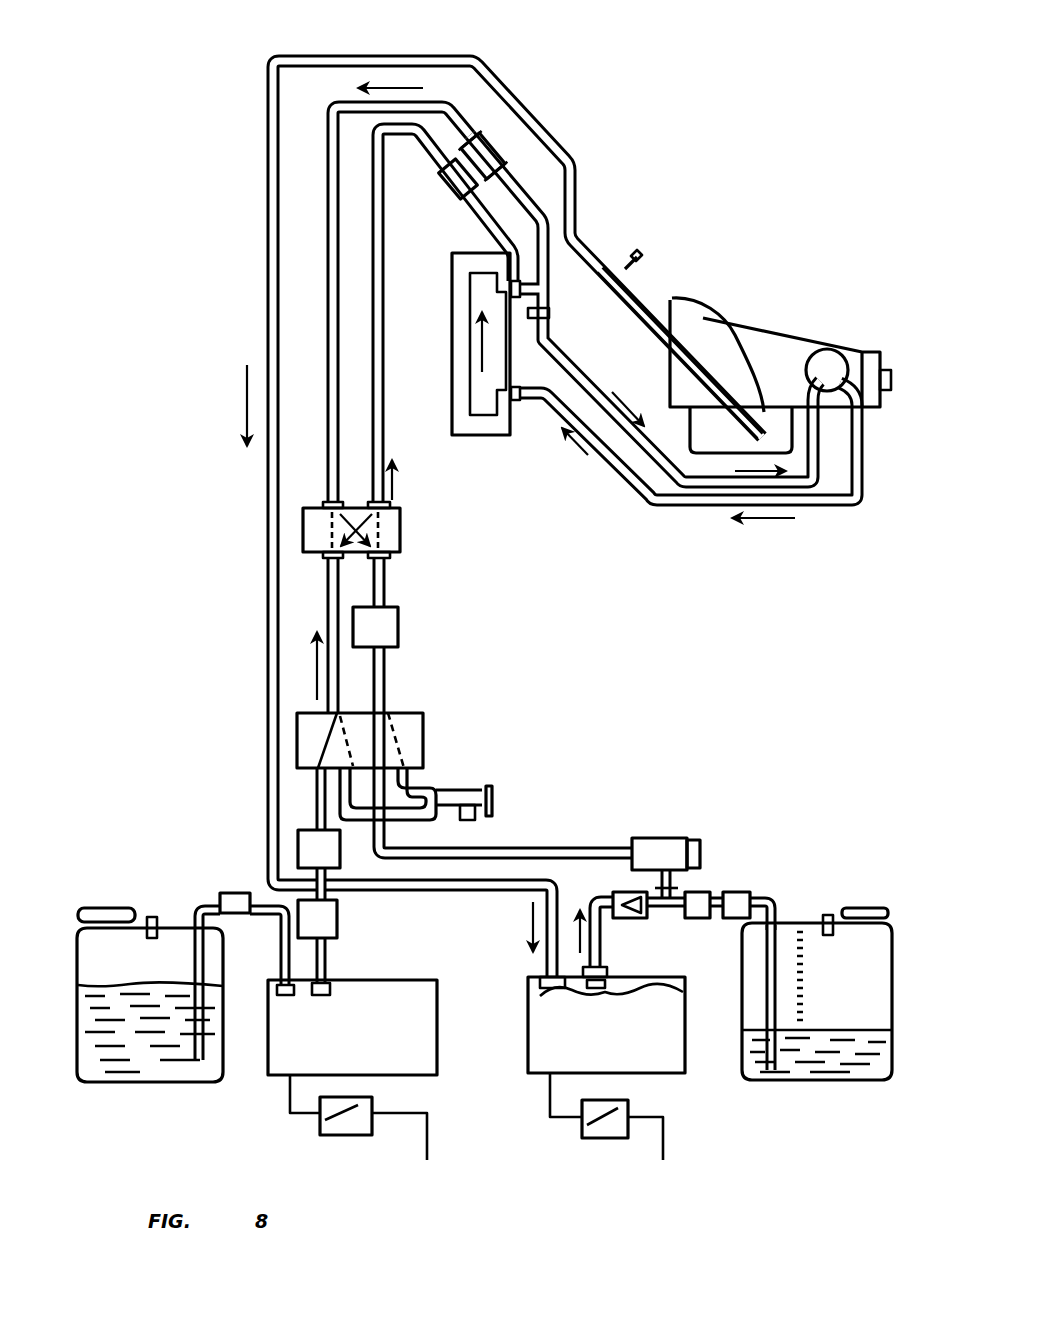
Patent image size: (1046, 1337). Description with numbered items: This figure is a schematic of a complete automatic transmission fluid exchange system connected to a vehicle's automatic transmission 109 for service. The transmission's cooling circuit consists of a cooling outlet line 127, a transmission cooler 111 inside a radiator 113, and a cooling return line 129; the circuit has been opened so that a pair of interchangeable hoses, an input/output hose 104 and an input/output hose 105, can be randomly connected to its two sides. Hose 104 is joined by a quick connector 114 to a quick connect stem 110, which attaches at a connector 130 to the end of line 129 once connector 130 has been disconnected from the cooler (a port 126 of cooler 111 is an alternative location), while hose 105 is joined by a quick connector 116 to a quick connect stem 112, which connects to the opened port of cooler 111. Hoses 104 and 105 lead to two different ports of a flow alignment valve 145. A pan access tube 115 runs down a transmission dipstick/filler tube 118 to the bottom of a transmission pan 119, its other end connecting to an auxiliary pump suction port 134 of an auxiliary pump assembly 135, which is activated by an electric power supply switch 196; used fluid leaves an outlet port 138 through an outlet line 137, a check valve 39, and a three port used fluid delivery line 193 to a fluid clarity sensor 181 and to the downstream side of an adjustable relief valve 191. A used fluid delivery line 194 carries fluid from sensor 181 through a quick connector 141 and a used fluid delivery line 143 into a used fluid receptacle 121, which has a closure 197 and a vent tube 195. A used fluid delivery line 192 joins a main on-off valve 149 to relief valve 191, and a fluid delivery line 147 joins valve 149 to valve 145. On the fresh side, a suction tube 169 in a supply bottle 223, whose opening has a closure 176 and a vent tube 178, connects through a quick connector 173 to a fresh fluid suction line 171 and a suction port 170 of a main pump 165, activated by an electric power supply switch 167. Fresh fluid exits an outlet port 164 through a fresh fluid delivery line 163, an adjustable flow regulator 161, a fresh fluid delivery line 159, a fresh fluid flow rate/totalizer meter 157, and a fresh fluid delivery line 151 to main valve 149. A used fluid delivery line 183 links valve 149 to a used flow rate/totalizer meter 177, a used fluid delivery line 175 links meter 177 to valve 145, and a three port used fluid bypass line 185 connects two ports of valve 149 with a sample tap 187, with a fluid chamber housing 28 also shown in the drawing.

The fluid chamber housing 28 is at (508, 256).
The check valve 39 is at (620, 892).
The input/output hose 104 is at (384, 328).
The input/output hose 105 is at (328, 306).
The automatic transmission 109 is at (766, 352).
The quick connect stem 110 is at (507, 222).
The transmission cooler 111 is at (482, 418).
The quick connect stem 112 is at (522, 183).
The radiator 113 is at (445, 362).
The quick connector 114 is at (455, 165).
The pan access tube 115 is at (524, 112).
The quick connector 116 is at (488, 140).
The transmission dipstick/filler tube 118 is at (654, 288).
The transmission pan 119 is at (700, 425).
The used fluid receptacle 121 is at (878, 968).
The port 126 is at (518, 403).
The cooling outlet line 127 is at (667, 507).
The cooling return line 129 is at (632, 452).
The connector 130 is at (549, 313).
The auxiliary pump suction port 134 is at (530, 990).
The auxiliary pump assembly 135 is at (562, 1030).
The outlet line 137 is at (600, 915).
The outlet port 138 is at (683, 992).
The quick connector 141 is at (748, 895).
The used fluid delivery line 143 is at (772, 902).
The flow alignment valve 145 is at (401, 530).
The fluid delivery line 147 is at (327, 608).
The main on-off valve 149 is at (418, 712).
The fresh fluid delivery line 151 is at (316, 800).
The fresh fluid flow rate/totalizer meter 157 is at (298, 845).
The fresh fluid delivery line 159 is at (328, 906).
The adjustable flow regulator 161 is at (338, 930).
The fresh fluid delivery line 163 is at (330, 988).
The outlet port 164 is at (316, 996).
The main pump 165 is at (396, 1010).
The electric power supply switch 167 is at (372, 1102).
The suction tube 169 is at (212, 895).
The suction port 170 is at (268, 1000).
The fresh fluid suction line 171 is at (276, 924).
The quick connector 173 is at (230, 893).
The used fluid delivery line 175 is at (385, 580).
The closure 176 is at (105, 905).
The used flow rate/totalizer meter 177 is at (400, 627).
The vent tube 178 is at (150, 916).
The fluid clarity sensor 181 is at (700, 890).
The used fluid delivery line 183 is at (385, 668).
The three port used fluid bypass line 185 is at (440, 782).
The sample tap 187 is at (490, 788).
The adjustable relief valve 191 is at (668, 838).
The used fluid delivery line 192 is at (528, 848).
The three port used fluid delivery line 193 is at (688, 920).
The used fluid delivery line 194 is at (735, 918).
The vent tube 195 is at (834, 912).
The electric power supply switch 196 is at (628, 1105).
The closure 197 is at (868, 904).
The supply bottle 223 is at (130, 1020).